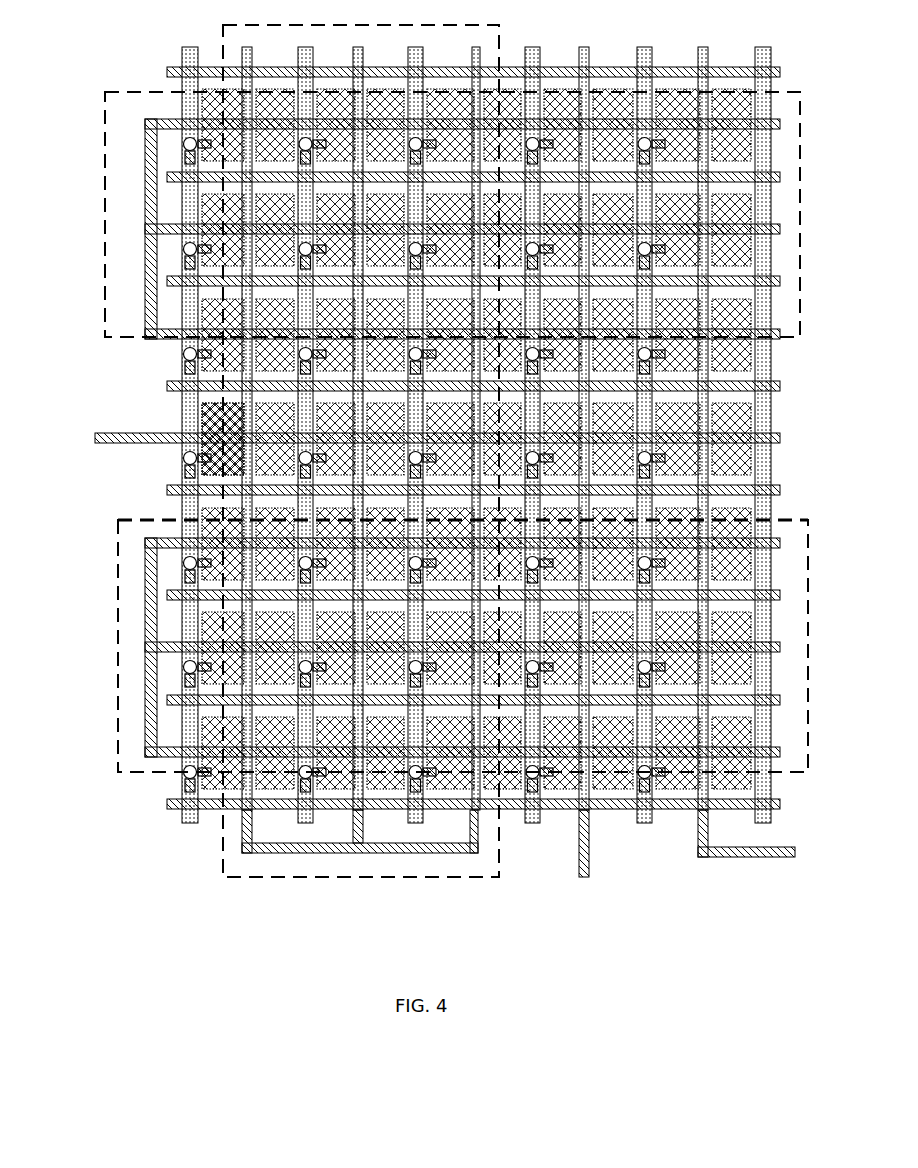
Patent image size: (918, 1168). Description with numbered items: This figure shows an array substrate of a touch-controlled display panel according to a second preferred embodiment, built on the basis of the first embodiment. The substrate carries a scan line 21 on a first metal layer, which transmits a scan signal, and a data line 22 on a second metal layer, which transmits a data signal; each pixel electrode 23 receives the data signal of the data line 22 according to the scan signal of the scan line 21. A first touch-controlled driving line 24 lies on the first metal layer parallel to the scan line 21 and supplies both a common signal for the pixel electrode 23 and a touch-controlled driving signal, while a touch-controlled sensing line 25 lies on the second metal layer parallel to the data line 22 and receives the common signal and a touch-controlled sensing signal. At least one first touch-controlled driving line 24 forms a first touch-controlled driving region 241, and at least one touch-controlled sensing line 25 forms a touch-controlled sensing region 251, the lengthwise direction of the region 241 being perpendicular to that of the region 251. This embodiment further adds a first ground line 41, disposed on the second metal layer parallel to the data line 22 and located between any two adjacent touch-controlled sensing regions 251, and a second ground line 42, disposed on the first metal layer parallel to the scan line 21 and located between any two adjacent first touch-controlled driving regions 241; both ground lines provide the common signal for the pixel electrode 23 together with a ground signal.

The scan line 21 is at (188, 823).
The data line 22 is at (607, 810).
The pixel electrode 23 is at (215, 412).
The first touch-controlled driving line 24 is at (480, 823).
The first touch-controlled driving region 241 is at (372, 877).
The touch-controlled sensing line 25 is at (172, 520).
The touch-controlled sensing region 251 is at (104, 197).
The first ground line 41 is at (98, 433).
The second ground line 42 is at (588, 878).